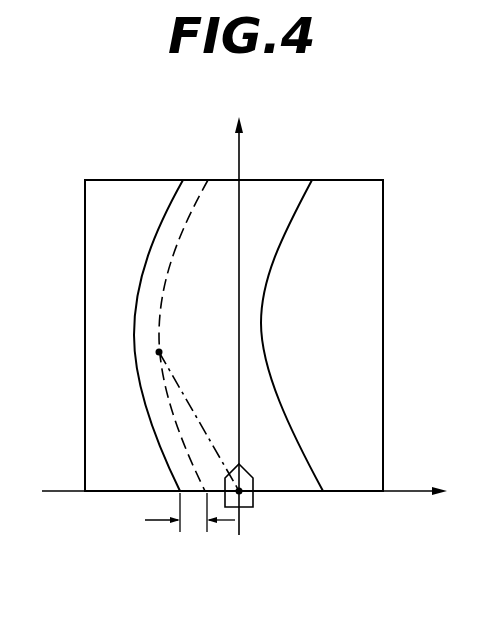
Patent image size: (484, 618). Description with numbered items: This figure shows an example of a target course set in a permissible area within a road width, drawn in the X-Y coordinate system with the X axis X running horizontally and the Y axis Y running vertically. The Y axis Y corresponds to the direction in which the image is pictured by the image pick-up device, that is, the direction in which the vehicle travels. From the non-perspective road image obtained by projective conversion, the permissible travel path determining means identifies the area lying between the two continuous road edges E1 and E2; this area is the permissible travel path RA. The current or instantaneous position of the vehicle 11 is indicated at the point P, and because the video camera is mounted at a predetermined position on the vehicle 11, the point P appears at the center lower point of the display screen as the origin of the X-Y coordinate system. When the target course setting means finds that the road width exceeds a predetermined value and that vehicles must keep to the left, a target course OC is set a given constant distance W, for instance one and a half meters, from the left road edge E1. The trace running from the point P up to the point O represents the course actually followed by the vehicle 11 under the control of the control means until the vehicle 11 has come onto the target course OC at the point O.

The continuous road edge E1 is at (147, 245).
The continuous road edge E2 is at (279, 246).
The target course OC is at (158, 300).
The point on target course O is at (158, 352).
The permissible travel path RA is at (268, 205).
The current position of the vehicle P is at (253, 499).
The vehicle 11 is at (247, 510).
The constant distance W is at (190, 512).
The X-axis X is at (254, 492).
The Y-axis Y is at (239, 309).